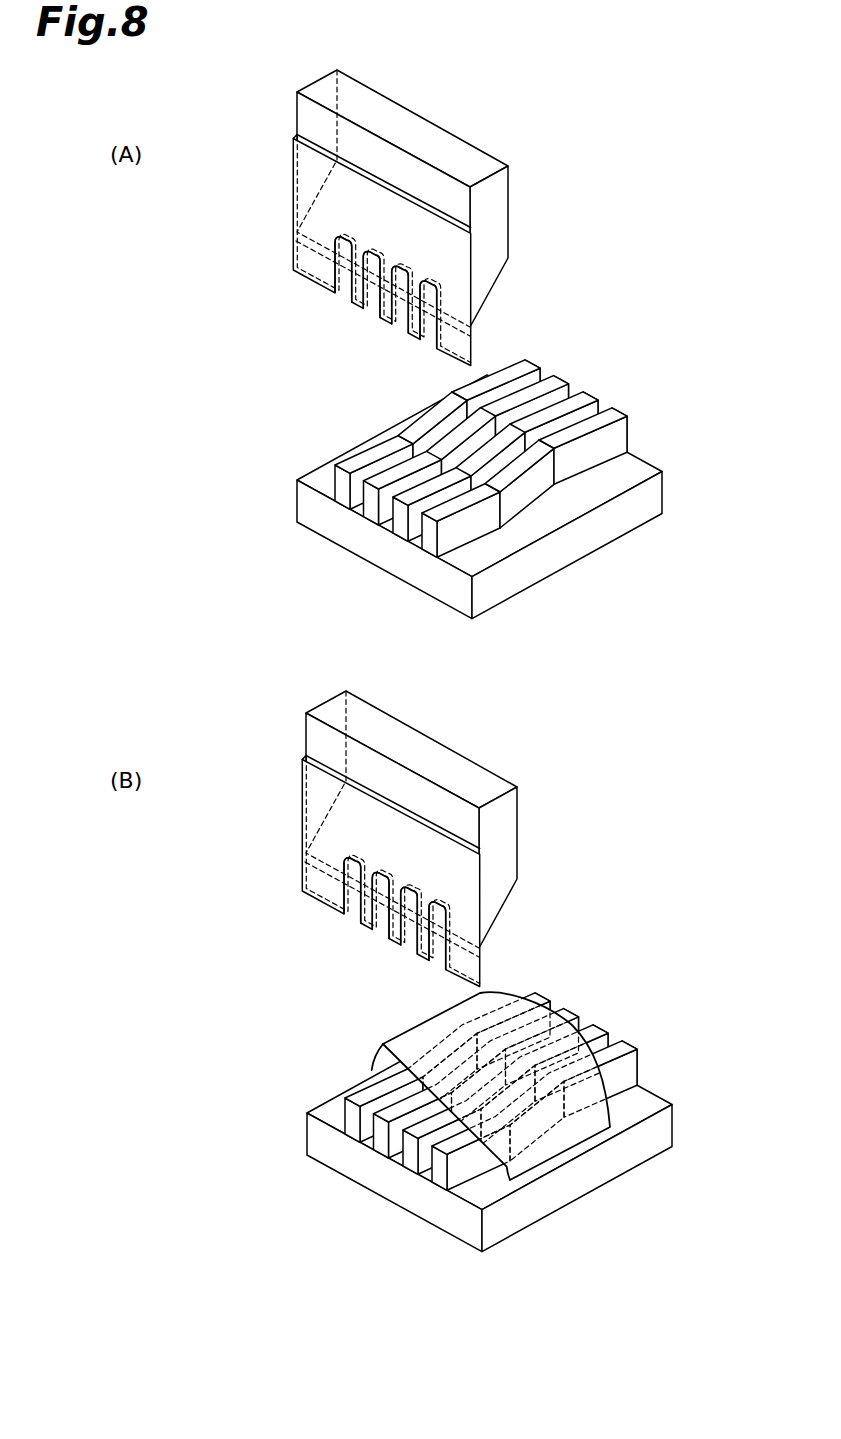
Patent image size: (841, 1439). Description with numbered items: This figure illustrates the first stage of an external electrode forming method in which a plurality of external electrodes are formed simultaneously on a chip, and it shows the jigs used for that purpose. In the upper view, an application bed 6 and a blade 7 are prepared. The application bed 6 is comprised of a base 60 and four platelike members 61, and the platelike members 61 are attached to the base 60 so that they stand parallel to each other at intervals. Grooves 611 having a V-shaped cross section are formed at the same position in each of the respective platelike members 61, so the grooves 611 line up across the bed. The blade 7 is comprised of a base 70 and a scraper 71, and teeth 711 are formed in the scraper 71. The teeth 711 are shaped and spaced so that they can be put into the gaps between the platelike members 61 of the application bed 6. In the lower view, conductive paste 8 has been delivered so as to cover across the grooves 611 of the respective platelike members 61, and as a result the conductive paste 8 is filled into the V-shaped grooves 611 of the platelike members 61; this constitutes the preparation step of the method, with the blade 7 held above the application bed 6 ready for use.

The application bed 6 is at (531, 780).
The base 60 is at (654, 500).
The platelike members 61 is at (533, 358).
The grooves 611 is at (457, 421).
The blade 7 is at (394, 527).
The base 70 is at (500, 221).
The scraper 71 is at (303, 188).
The teeth 711 is at (408, 325).
The conductive paste 8 is at (560, 1145).